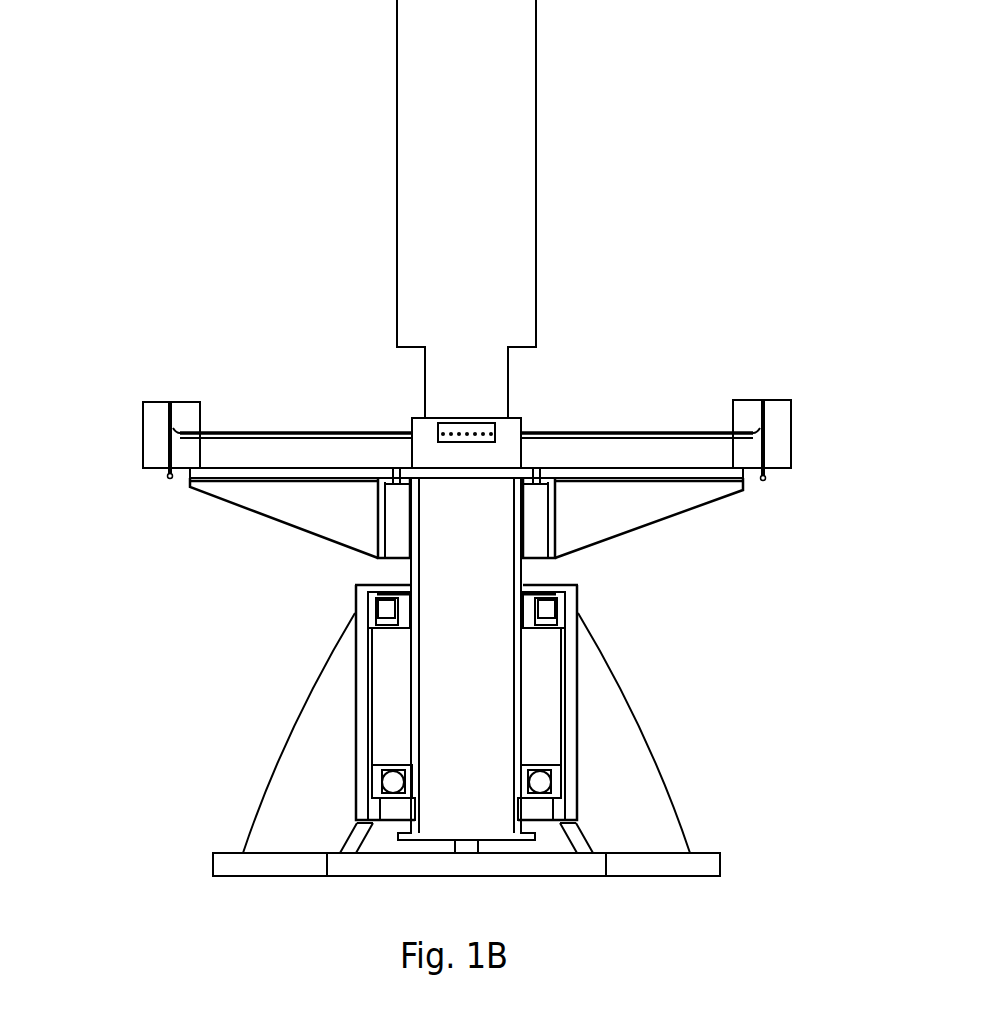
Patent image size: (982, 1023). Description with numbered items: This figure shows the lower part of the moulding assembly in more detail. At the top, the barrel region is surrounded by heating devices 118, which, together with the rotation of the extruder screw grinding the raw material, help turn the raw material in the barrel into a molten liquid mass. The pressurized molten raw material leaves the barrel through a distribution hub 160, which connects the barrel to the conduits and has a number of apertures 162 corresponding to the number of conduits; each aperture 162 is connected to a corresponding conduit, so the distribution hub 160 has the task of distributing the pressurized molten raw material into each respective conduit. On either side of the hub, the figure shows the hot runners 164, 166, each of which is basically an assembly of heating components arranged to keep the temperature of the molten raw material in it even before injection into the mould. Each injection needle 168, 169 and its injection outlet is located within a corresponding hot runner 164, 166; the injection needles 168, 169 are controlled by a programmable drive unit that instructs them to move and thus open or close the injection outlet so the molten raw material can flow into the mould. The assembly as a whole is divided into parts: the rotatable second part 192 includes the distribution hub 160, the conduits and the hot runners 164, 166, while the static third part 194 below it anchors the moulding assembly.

The heating device 118 is at (490, 130).
The distribution hub 160 is at (468, 417).
The apertures 162 is at (467, 433).
The hot runner 164 is at (157, 435).
The hot runner 166 is at (780, 423).
The injection needle 168 is at (168, 479).
The injection needle 169 is at (763, 481).
The rotatable second part 192 is at (713, 550).
The static third part 194 is at (702, 713).